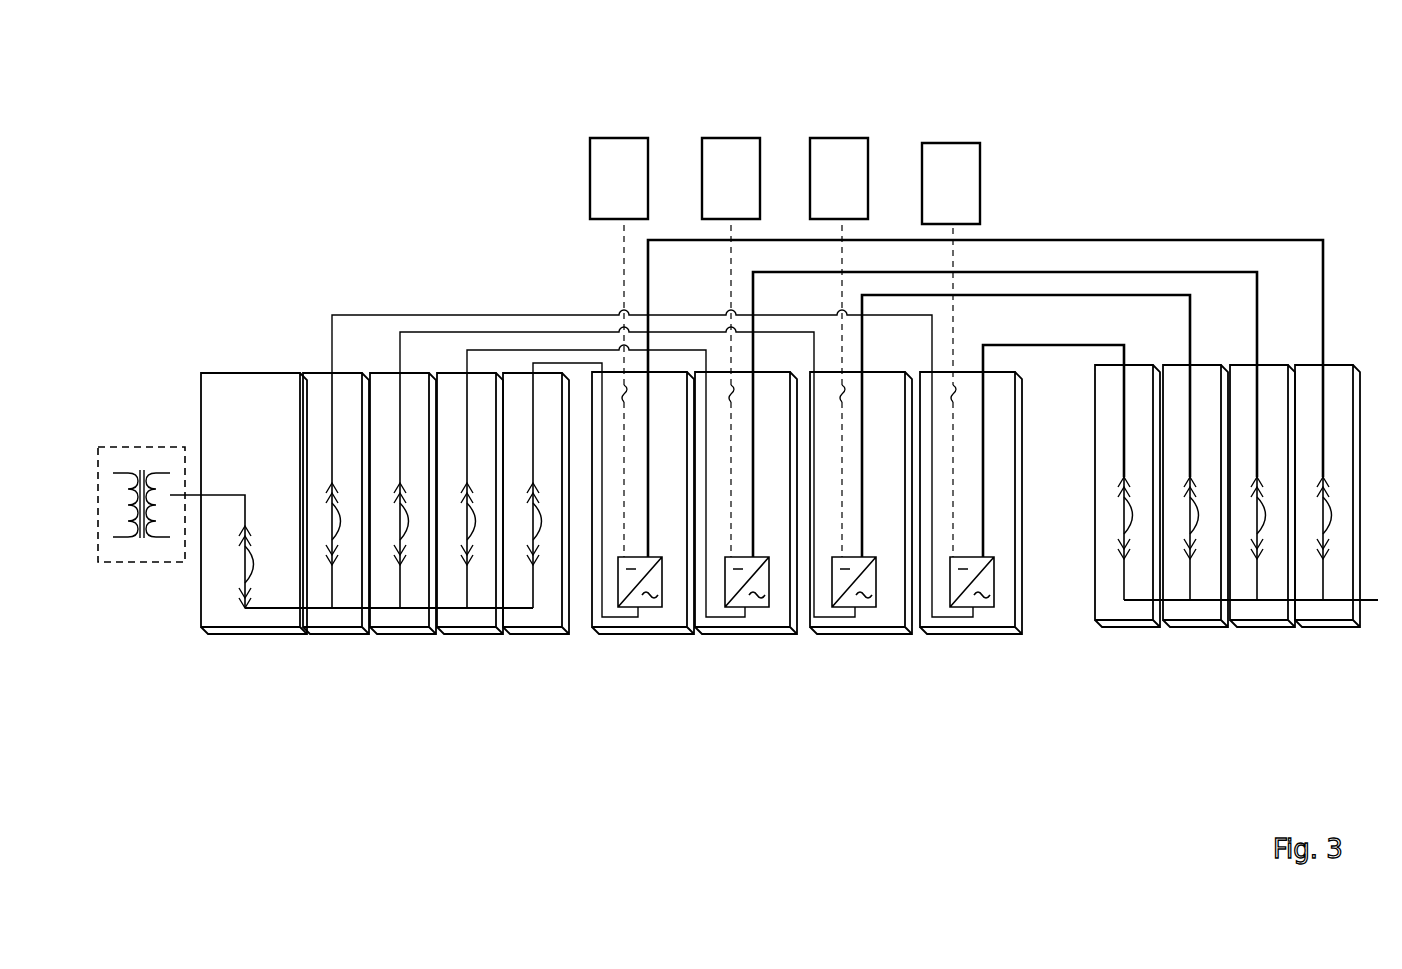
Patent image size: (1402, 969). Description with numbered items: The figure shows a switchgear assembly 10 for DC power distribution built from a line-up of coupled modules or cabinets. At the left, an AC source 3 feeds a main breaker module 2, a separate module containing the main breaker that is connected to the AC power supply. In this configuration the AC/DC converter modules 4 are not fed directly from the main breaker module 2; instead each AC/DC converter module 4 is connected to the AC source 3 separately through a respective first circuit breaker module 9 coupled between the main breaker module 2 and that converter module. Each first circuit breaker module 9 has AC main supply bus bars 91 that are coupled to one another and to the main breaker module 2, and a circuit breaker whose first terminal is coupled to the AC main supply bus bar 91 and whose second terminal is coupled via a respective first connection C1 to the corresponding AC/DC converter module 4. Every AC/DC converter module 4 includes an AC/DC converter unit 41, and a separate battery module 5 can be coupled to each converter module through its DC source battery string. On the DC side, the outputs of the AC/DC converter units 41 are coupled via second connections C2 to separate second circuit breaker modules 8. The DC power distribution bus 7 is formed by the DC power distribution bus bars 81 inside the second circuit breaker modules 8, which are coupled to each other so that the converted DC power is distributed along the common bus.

The switchgear assembly 10 is at (1235, 129).
The main breaker module 2 is at (219, 617).
The AC source 3 is at (122, 472).
The first circuit breaker module 9 is at (352, 621).
The AC main supply bus bar 91 is at (319, 610).
The AC/DC converter module 4 is at (673, 603).
The AC/DC converter unit 41 is at (633, 595).
The battery module 5 is at (630, 195).
The second circuit breaker module 8 is at (1114, 587).
The DC power distribution bus bar 81 is at (1142, 603).
The DC power distribution bus 7 is at (1377, 605).
The first connection C1 is at (485, 315).
The second connection C2 is at (1085, 239).